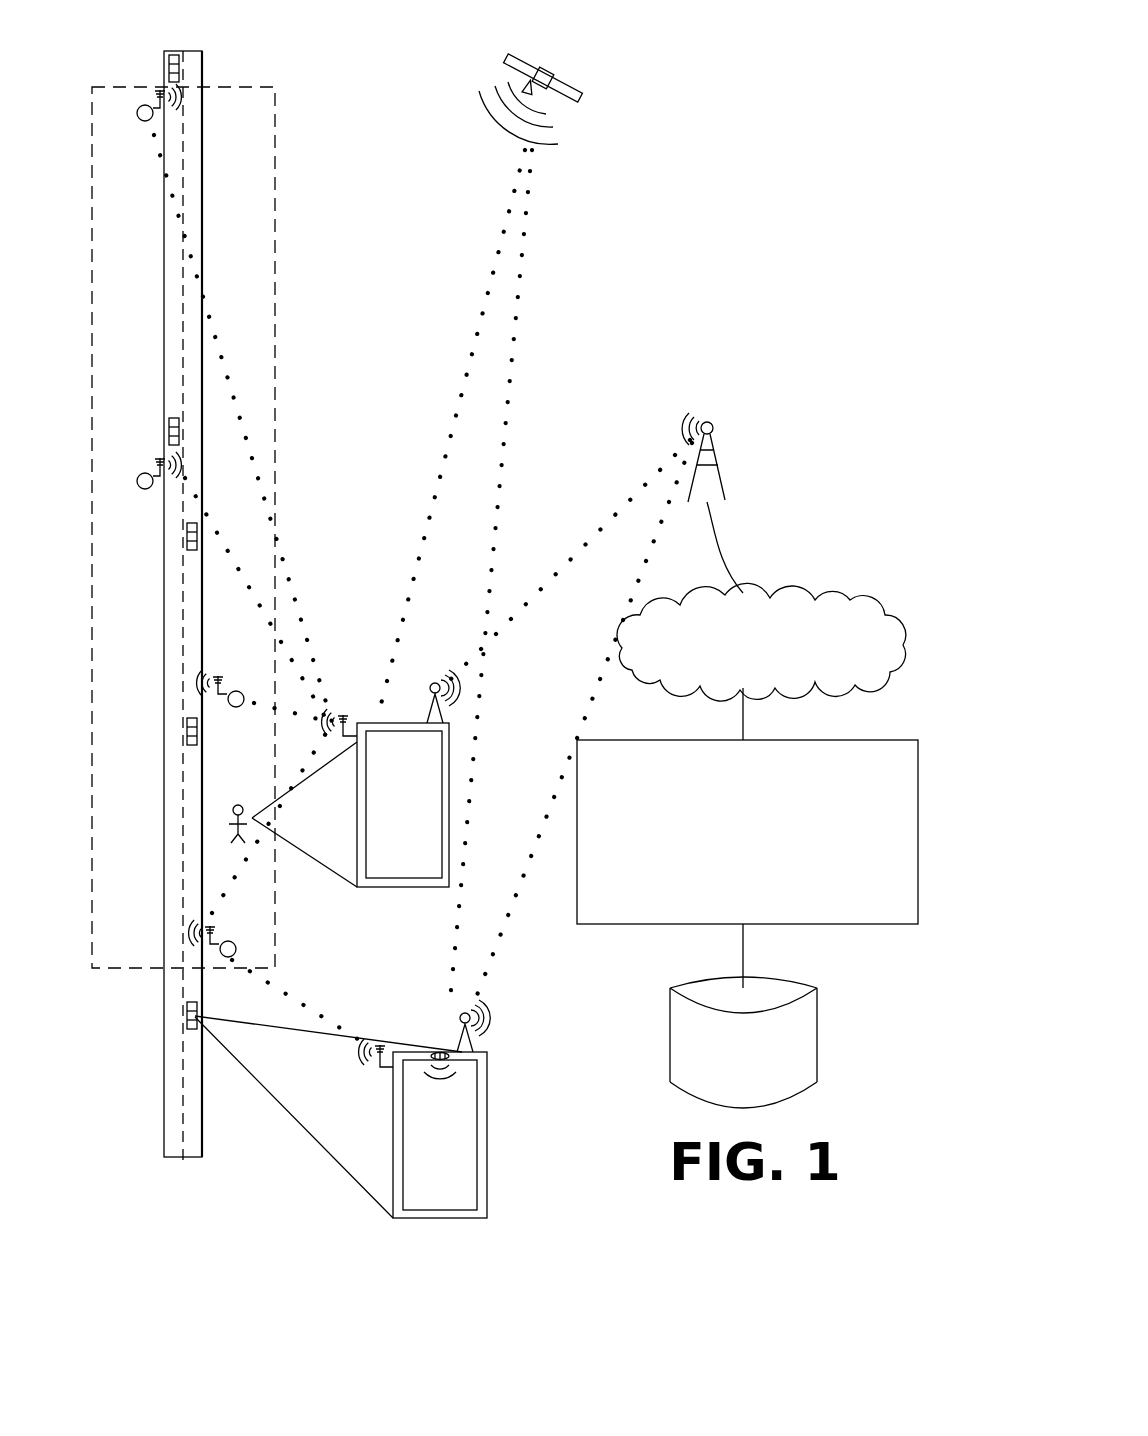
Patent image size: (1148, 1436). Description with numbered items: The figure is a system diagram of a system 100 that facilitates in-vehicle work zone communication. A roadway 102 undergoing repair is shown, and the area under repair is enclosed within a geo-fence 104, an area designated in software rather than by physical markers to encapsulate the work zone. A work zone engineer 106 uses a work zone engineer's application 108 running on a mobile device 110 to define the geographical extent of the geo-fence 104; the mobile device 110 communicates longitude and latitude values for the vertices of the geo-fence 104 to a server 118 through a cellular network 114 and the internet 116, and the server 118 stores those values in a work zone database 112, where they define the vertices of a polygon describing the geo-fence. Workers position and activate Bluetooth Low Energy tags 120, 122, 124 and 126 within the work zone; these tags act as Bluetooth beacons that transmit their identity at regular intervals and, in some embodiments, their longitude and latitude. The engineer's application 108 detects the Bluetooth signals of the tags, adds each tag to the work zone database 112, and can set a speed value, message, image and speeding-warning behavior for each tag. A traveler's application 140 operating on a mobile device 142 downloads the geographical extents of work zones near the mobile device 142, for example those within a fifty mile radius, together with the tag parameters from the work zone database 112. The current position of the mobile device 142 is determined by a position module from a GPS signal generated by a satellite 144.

The system 100 is at (697, 108).
The roadway 102 is at (202, 60).
The geo-fence 104 is at (275, 210).
The work zone engineer 106 is at (241, 804).
The work zone engineer's application 108 is at (395, 872).
The mobile device 110 is at (449, 852).
The work zone database 112 is at (818, 1033).
The cellular network 114 is at (715, 462).
The internet 116 is at (833, 598).
The server 118 is at (747, 864).
The BLE tag 120 is at (143, 121).
The BLE tag 122 is at (143, 489).
The BLE tag 124 is at (240, 691).
The BLE tag 126 is at (232, 941).
The traveler's application 140 is at (445, 1203).
The mobile device 142 is at (487, 1143).
The satellite 144 is at (573, 80).